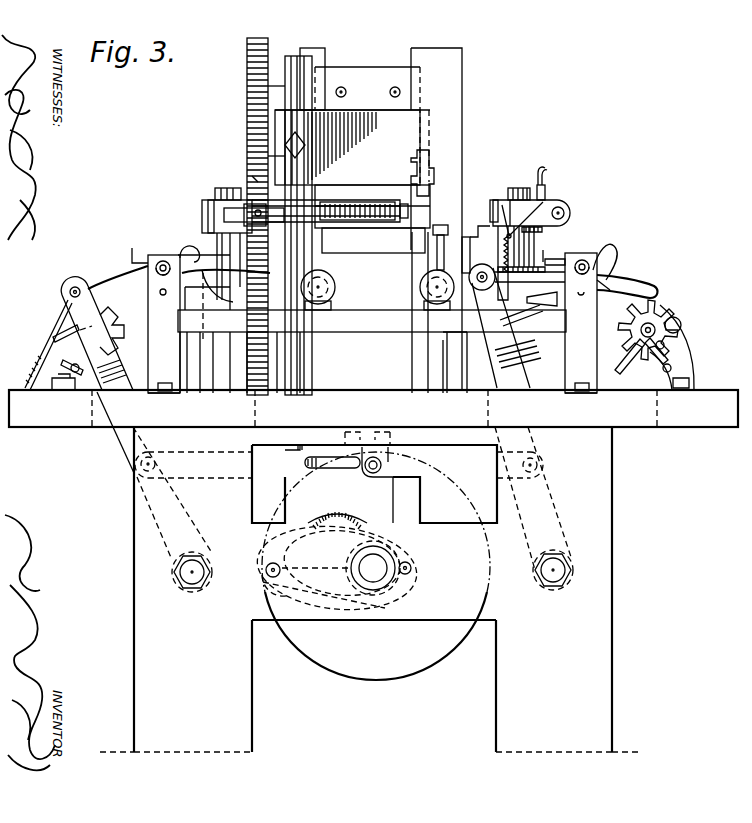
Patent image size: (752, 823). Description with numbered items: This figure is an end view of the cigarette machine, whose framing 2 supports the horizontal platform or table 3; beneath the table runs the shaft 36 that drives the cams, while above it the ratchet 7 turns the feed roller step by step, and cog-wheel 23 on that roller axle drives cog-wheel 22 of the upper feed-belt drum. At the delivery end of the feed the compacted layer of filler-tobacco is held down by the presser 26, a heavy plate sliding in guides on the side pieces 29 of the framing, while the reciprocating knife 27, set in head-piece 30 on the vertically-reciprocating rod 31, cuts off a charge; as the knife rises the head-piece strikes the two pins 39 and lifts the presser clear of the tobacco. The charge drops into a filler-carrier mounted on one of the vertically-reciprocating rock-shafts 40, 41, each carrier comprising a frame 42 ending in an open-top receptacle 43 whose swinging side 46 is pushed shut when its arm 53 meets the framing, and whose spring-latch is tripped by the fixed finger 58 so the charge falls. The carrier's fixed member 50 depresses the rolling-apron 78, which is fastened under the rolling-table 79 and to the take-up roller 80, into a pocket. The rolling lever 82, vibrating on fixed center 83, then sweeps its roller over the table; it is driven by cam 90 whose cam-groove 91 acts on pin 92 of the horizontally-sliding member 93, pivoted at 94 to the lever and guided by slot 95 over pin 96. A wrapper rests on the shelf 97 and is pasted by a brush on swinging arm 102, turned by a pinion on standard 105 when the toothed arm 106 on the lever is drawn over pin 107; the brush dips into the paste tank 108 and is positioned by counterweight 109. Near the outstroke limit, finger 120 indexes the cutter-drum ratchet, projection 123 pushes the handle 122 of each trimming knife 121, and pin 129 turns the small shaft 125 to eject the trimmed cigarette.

The framing 2 is at (370, 589).
The horizontal platform or table 3 is at (373, 408).
The ratchet 7 is at (488, 224).
The cog-wheel 22 is at (247, 76).
The cog-wheel 23 is at (252, 180).
The presser 26 is at (352, 74).
The reciprocating knife 27 is at (384, 190).
The side pieces of the framing 29 is at (430, 50).
The head-piece 30 is at (347, 147).
The vertically-reciprocating rod 31 is at (290, 56).
The shaft 36 is at (352, 566).
The pins 39 is at (368, 91).
The rock-shaft 40 is at (212, 192).
The rock-shaft 41 is at (516, 188).
The frame 42 is at (202, 214).
The open-top receptacle 43 is at (521, 250).
The swinging side 46 is at (546, 194).
The fixed member 50 is at (490, 212).
The arm 53 is at (547, 170).
The fixed finger 58 is at (544, 250).
The rolling-apron 78 is at (128, 280).
The rolling-table 79 is at (146, 286).
The take-up roller 80 is at (377, 290).
The rolling lever 82 is at (133, 462).
The fixed center 83 is at (190, 580).
The cam 90 is at (376, 566).
The cam-groove 91 is at (335, 605).
The pin 92 is at (268, 578).
The horizontally-sliding frame or member 93 is at (374, 477).
The pivot 94 is at (165, 456).
The slot 95 is at (332, 468).
The pin 96 is at (372, 474).
The shelf or bridge-like support 97 is at (556, 258).
The swinging arm 102 is at (608, 250).
The standard 105 is at (372, 360).
The swinging toothed arm 106 is at (66, 306).
The pin 107 is at (372, 323).
The paste tank 108 is at (132, 248).
The counterweight 109 is at (626, 270).
The projection or finger 120 is at (50, 332).
The knives 121 is at (684, 325).
The handle 122 is at (630, 366).
The projection 123 is at (100, 352).
The small shaft 125 is at (692, 363).
The projection or pin 129 is at (84, 392).